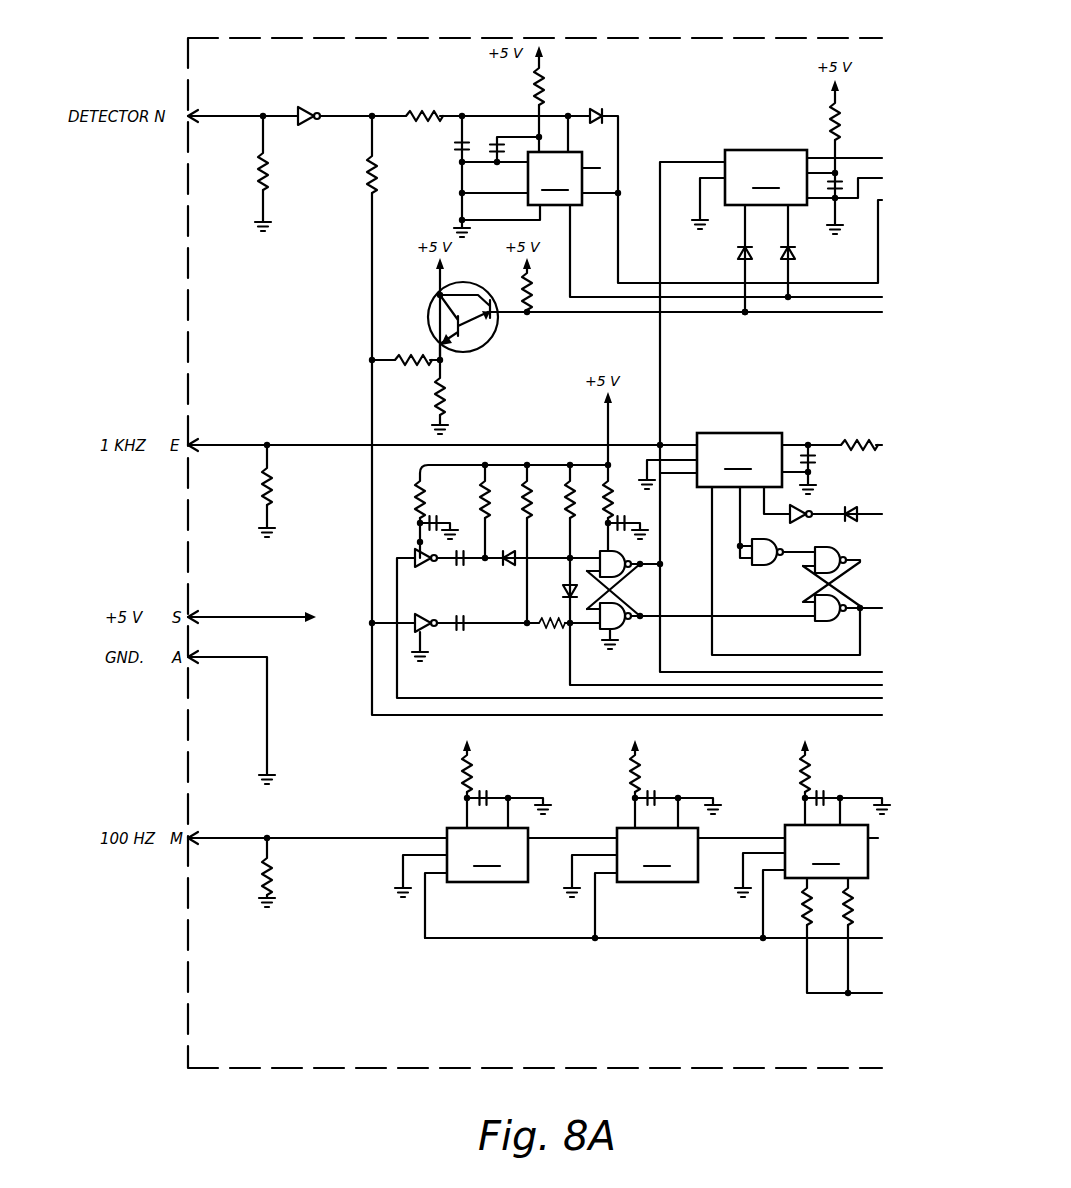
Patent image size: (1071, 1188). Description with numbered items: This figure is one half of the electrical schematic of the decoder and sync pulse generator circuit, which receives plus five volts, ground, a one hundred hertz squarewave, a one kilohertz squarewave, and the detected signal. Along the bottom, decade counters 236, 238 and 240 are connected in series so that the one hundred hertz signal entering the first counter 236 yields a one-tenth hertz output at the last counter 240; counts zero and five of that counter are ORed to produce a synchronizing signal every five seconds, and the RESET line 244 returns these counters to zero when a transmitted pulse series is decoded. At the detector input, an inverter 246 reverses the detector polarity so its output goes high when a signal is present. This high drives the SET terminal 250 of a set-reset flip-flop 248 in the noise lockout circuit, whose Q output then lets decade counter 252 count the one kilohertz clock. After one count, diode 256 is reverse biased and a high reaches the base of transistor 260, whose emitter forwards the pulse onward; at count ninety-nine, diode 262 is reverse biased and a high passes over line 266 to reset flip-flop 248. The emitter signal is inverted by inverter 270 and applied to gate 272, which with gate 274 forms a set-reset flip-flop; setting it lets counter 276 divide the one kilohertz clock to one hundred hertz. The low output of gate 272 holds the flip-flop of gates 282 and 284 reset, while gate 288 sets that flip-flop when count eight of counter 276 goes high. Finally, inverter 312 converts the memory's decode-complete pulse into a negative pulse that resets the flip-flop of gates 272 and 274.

The decade counter 236 is at (473, 830).
The decade counter 238 is at (642, 830).
The decade counter 240 is at (827, 859).
The RESET line 244 is at (717, 940).
The inverter 246 is at (312, 106).
The SET-RESET type flip-flop 248 is at (555, 178).
The SET terminal 250 is at (568, 118).
The decade counter 252 is at (766, 177).
The diode 256 is at (738, 253).
The transistor 260 is at (484, 346).
The diode 262 is at (800, 254).
The line 266 is at (573, 268).
The inverter 270 is at (428, 632).
The gate 272 is at (605, 629).
The gate 274 is at (624, 553).
The counter 276 is at (739, 460).
The gate 282 is at (820, 622).
The gate 284 is at (838, 548).
The gate 288 is at (751, 568).
The inverter 312 is at (400, 552).